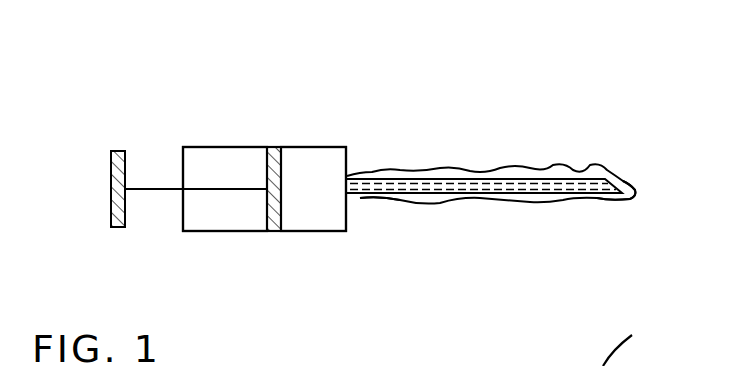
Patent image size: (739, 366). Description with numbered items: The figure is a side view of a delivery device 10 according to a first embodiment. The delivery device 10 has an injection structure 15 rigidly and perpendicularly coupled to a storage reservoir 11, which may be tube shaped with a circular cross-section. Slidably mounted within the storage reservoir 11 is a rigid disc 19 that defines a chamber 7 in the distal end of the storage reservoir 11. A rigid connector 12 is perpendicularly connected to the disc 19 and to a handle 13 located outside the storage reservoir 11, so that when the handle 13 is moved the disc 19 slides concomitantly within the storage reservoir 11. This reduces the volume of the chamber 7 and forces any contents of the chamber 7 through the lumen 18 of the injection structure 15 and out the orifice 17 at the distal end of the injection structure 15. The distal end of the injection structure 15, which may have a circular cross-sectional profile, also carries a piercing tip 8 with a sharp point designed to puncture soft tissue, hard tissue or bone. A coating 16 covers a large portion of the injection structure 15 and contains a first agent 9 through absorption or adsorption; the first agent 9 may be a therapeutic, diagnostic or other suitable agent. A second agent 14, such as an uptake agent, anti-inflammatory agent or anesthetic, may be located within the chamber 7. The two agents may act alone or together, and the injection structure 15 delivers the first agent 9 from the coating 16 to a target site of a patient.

The chamber 7 is at (327, 161).
The piercing tip 8 is at (637, 192).
The first agent 9 is at (412, 200).
The delivery device 10 is at (344, 86).
The storage reservoir 11 is at (232, 146).
The rigid connector 12 is at (153, 190).
The handle 13 is at (116, 228).
The second agent 14 is at (311, 219).
The injection structure 15 is at (351, 196).
The coating 16 is at (520, 206).
The orifice 17 is at (608, 199).
The lumen 18 is at (533, 185).
The rigid disc 19 is at (274, 146).